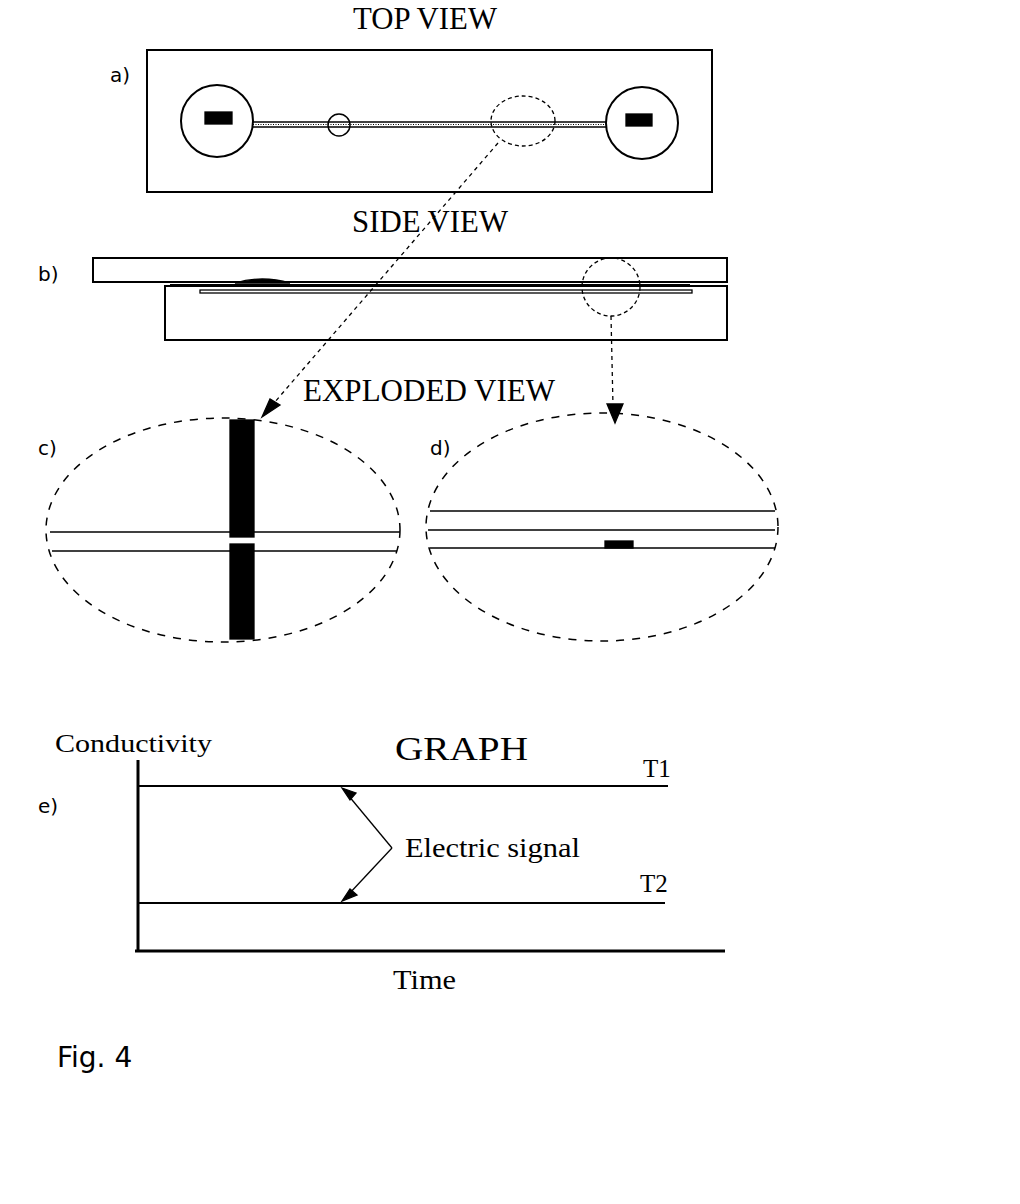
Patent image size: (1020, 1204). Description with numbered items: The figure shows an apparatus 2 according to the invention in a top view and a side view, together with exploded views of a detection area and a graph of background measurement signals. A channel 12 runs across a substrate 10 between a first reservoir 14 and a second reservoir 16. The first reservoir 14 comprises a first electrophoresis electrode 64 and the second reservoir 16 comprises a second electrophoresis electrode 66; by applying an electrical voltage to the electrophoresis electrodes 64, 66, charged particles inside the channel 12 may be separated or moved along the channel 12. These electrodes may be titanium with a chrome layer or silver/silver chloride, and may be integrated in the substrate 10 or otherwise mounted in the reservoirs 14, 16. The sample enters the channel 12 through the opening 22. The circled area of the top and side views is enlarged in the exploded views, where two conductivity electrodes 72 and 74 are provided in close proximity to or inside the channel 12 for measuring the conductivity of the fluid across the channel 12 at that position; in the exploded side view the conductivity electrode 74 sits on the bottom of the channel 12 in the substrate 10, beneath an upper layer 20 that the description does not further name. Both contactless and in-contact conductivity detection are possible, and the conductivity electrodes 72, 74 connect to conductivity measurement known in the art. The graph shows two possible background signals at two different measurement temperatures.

The apparatus 2 is at (752, 47).
The substrate 10 is at (602, 589).
The channel 12 is at (403, 126).
The first reservoir 14 is at (213, 95).
The second reservoir 16 is at (637, 96).
The cover layer 20 is at (558, 522).
The opening 22 is at (343, 114).
The first electrophoresis electrode 64 is at (223, 125).
The second electrophoresis electrode 66 is at (638, 127).
The conductivity electrode 72 is at (254, 466).
The conductivity electrode 74 is at (254, 598).